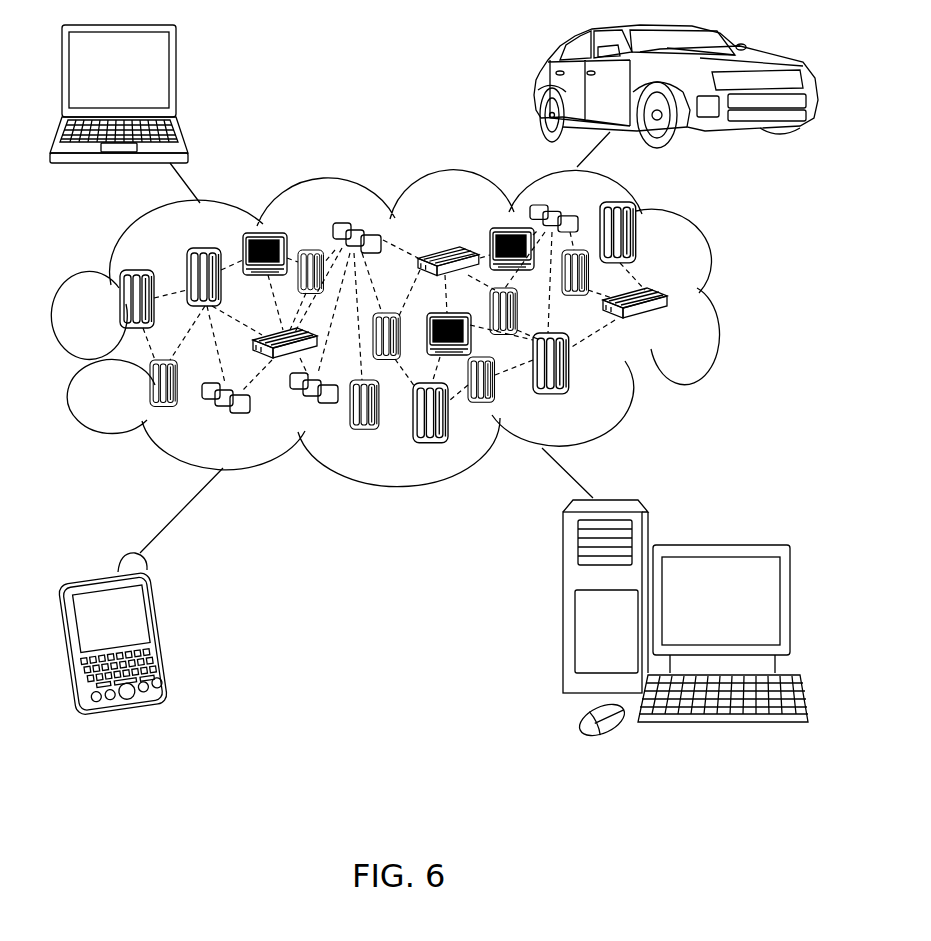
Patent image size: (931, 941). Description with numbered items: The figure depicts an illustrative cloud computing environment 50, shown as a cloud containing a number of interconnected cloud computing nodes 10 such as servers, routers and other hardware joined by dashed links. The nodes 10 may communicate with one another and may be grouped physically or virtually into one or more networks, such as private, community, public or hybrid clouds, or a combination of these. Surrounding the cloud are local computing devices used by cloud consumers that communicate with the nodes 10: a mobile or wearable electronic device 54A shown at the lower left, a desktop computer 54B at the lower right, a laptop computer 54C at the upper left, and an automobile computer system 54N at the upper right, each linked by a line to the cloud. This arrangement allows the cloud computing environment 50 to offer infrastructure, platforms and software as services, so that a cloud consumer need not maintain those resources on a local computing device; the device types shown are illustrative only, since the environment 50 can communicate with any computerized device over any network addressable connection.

The cloud computing nodes 10 is at (666, 329).
The cloud computing environment 50 is at (716, 303).
The mobile and/or wearable electronic devices 54A is at (172, 632).
The desktop computer 54B is at (718, 545).
The laptop computer 54C is at (176, 72).
The automobile computer system 54N is at (533, 82).